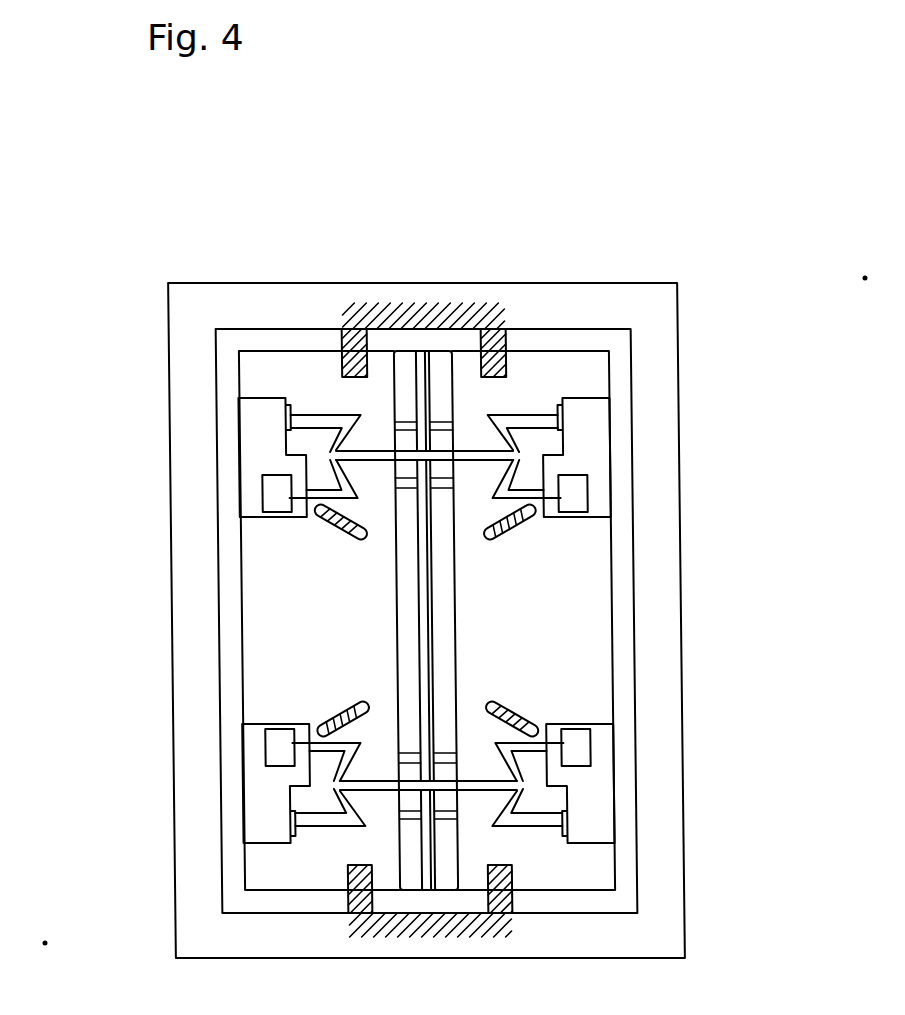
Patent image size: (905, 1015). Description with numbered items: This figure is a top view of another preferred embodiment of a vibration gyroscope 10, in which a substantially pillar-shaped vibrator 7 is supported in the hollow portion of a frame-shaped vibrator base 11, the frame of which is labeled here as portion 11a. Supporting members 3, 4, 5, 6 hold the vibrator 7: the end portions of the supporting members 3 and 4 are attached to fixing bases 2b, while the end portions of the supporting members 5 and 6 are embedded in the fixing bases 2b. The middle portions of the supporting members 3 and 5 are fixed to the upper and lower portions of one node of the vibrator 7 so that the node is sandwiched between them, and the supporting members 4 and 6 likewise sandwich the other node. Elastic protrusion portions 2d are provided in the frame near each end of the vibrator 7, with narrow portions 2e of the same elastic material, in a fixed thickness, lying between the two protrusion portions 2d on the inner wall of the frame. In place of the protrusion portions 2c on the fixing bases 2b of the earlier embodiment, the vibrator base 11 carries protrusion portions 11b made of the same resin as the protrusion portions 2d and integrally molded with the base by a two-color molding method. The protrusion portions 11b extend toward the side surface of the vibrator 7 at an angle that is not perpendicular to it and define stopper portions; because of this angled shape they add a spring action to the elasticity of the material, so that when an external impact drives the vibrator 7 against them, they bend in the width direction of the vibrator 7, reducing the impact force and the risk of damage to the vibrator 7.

The vibration gyroscope 10 is at (377, 257).
The vibrator base 11 is at (157, 307).
The housing wall 11a is at (652, 340).
The protrusion portions 11b is at (503, 533).
The fixing bases 2b is at (588, 447).
The protrusion portions 2c is at (523, 478).
The protrusion portions 2d is at (342, 360).
The narrow portions 2e is at (423, 307).
The supporting member 3 is at (533, 523).
The supporting member 4 is at (537, 725).
The supporting member 5 is at (519, 422).
The supporting member 6 is at (518, 815).
The vibrator 7 is at (405, 666).